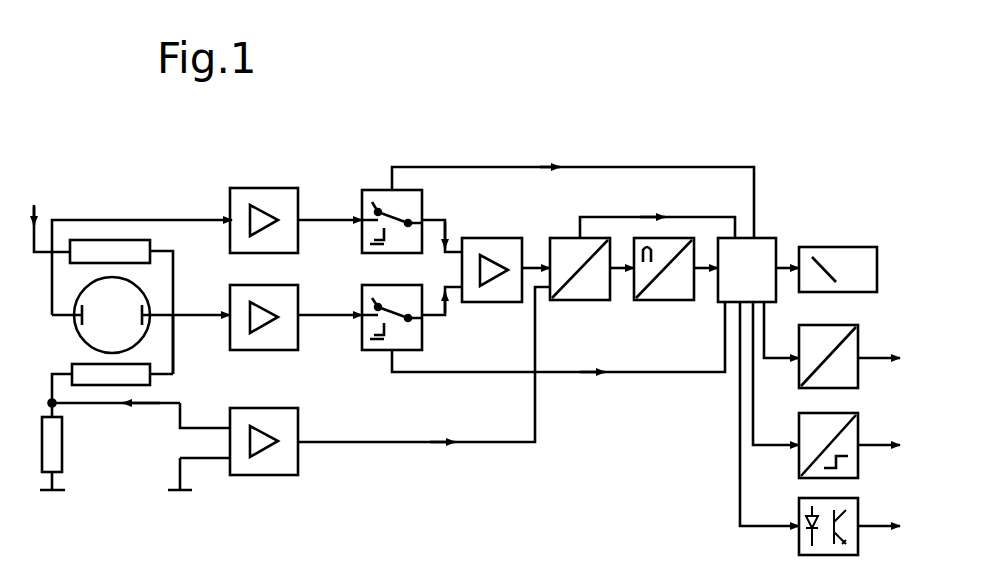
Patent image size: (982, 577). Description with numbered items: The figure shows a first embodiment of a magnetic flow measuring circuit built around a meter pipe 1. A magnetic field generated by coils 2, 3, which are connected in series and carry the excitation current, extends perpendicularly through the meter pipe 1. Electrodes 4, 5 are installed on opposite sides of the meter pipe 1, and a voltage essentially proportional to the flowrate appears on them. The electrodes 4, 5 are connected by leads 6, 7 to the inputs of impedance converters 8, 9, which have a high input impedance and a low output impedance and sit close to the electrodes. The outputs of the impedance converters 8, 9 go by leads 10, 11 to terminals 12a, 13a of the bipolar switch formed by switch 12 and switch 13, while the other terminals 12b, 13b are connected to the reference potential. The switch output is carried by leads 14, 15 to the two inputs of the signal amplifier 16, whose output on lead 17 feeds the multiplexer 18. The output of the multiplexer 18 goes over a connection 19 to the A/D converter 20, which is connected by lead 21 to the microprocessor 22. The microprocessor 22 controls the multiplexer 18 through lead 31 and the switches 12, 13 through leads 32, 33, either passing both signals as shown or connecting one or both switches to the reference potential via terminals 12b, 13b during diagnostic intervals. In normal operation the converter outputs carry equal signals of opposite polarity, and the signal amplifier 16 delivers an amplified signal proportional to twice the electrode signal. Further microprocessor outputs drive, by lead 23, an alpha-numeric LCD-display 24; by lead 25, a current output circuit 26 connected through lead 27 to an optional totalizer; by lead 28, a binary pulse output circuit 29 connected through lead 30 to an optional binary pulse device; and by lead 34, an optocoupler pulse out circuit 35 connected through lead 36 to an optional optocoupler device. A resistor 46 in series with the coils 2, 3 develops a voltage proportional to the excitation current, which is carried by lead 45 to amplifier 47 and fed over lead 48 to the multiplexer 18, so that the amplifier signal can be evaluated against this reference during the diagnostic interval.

The meter pipe 1 is at (78, 346).
The coil 2 is at (150, 246).
The coil 3 is at (140, 364).
The electrode 4 is at (78, 322).
The electrode 5 is at (156, 286).
The lead 6 is at (164, 218).
The lead 7 is at (178, 323).
The impedance converter 8 is at (266, 186).
The impedance converter 9 is at (250, 352).
The lead 10 is at (318, 216).
The lead 11 is at (318, 318).
The switch 12 is at (425, 196).
The terminal 12a is at (372, 202).
The terminal 12b is at (372, 240).
The switch 13 is at (425, 340).
The terminal 13a is at (366, 300).
The terminal 13b is at (388, 352).
The lead 14 is at (450, 222).
The lead 15 is at (450, 318).
The signal amplifier 16 is at (500, 236).
The lead 17 is at (528, 260).
The multiplexer 18 is at (588, 302).
The line 19 is at (618, 272).
The A/D converter 20 is at (656, 302).
The lead 21 is at (700, 272).
The microprocessor 22 is at (762, 236).
The lead 23 is at (782, 265).
The alpha-numeric LCD-display 24 is at (838, 246).
The lead 25 is at (770, 318).
The current output circuit 26 is at (864, 342).
The lead 27 is at (866, 362).
The lead 28 is at (758, 450).
The binary pulse output circuit 29 is at (799, 430).
The lead 30 is at (868, 450).
The lead 31 is at (704, 216).
The lead 32 is at (690, 165).
The lead 33 is at (538, 308).
The lead 34 is at (740, 494).
The optocoupler pulse out circuit 35 is at (799, 548).
The lead 36 is at (866, 530).
The lead 45 is at (126, 408).
The resistor 46 is at (62, 452).
The amplifier 47 is at (298, 416).
The lead 48 is at (422, 440).